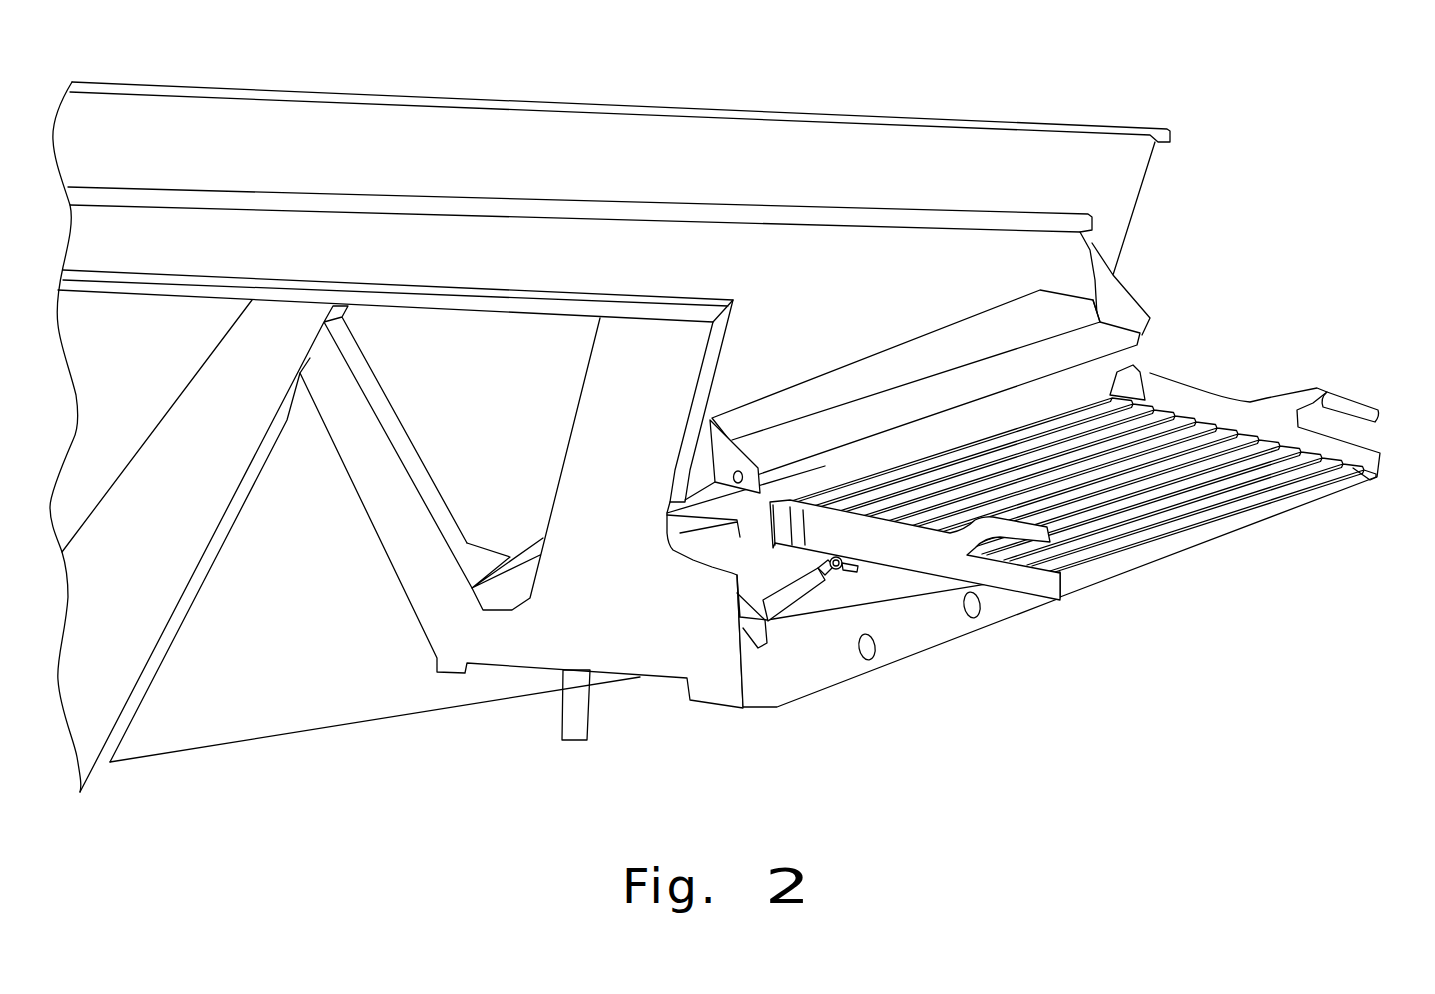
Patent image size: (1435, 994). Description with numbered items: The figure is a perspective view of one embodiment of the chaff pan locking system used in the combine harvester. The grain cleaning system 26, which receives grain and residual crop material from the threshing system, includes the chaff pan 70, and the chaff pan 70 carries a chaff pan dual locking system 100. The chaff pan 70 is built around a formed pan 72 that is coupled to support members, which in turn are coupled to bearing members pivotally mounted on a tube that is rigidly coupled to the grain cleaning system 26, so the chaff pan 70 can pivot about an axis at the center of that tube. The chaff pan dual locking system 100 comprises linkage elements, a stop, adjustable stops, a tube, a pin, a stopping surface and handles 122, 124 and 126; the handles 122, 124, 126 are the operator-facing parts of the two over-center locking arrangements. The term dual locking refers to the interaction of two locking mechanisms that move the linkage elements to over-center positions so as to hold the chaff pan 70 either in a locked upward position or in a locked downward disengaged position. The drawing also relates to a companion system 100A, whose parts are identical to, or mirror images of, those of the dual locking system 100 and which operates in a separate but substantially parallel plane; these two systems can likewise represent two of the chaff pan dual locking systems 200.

The grain cleaning system 26 is at (1255, 130).
The chaff pan 70 is at (1067, 505).
The formed pan 72 is at (1257, 523).
The chaff pan dual locking system 100 is at (898, 661).
The chaff pan dual locking system 200 is at (935, 604).
The chaff pan dual locking system 100A is at (1216, 558).
The handle 122 is at (790, 595).
The handle 124 is at (960, 535).
The handle 126 is at (1360, 400).